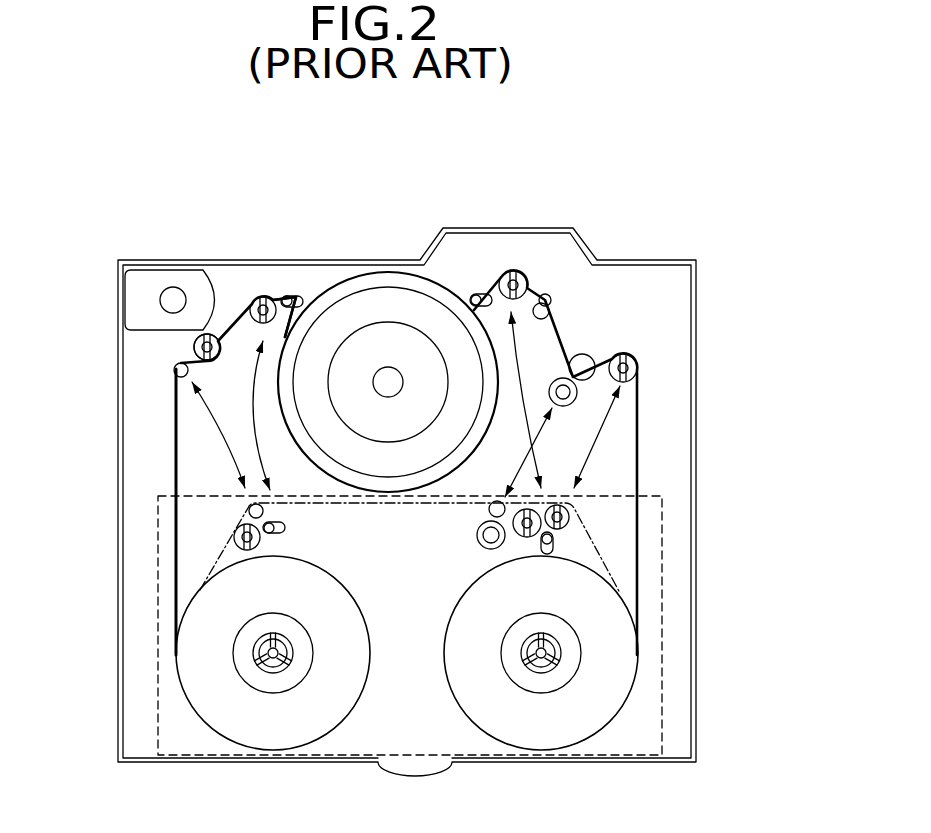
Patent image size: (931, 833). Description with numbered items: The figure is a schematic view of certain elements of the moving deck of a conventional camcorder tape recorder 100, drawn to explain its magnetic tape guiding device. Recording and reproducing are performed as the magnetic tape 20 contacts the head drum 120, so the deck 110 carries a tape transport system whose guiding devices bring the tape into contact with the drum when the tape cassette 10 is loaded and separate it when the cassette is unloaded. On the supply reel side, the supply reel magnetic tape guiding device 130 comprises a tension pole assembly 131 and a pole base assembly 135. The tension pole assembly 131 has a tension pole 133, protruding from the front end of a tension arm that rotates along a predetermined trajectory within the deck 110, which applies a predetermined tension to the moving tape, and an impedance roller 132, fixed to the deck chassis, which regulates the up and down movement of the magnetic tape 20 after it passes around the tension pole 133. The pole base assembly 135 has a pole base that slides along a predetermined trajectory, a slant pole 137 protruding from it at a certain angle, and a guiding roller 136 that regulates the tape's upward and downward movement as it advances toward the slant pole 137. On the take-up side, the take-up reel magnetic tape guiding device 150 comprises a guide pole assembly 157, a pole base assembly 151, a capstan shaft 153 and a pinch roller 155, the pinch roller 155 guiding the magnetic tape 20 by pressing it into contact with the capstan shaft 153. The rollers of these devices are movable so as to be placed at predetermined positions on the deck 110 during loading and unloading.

The tape recorder 100 is at (106, 183).
The deck 110 is at (708, 518).
The head drum 120 is at (423, 285).
The tape cassette 10 is at (163, 627).
The magnetic tape 20 is at (175, 480).
The supply reel magnetic tape guiding device 130 is at (285, 183).
The tension pole assembly 131 is at (190, 334).
The impedance roller 132 is at (194, 344).
The tension pole 133 is at (176, 371).
The pole base assembly 135 is at (276, 288).
The guiding roller 136 is at (289, 295).
The slant pole 137 is at (306, 296).
The take-up reel magnetic tape guiding device 150 is at (685, 178).
The pole base assembly 151 is at (508, 262).
The capstan shaft 153 is at (582, 354).
The pinch roller 155 is at (555, 378).
The guide pole assembly 157 is at (620, 353).